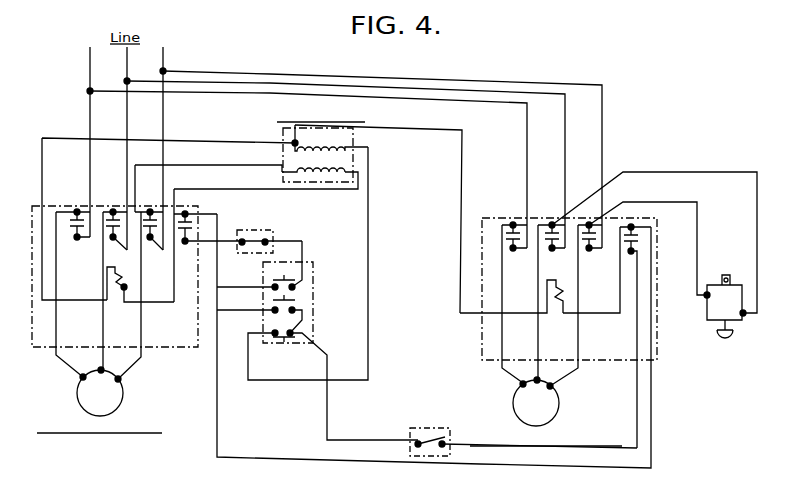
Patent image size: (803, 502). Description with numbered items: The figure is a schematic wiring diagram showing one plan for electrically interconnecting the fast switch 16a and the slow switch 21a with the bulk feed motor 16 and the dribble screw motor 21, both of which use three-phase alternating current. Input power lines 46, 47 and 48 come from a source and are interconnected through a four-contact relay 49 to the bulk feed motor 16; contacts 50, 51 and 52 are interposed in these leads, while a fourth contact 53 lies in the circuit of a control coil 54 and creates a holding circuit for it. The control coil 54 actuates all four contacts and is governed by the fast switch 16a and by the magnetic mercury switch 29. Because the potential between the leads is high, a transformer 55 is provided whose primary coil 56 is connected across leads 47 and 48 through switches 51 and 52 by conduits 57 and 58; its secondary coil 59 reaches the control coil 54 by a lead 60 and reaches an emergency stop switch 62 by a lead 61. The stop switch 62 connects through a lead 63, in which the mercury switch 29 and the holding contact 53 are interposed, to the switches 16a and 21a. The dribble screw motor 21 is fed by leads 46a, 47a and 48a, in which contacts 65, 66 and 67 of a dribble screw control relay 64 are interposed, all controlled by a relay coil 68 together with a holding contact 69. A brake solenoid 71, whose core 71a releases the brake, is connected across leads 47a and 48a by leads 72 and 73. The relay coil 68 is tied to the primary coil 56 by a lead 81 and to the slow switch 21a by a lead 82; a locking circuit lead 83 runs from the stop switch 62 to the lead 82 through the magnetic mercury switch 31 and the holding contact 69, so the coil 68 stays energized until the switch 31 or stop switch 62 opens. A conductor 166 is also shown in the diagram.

The bulk feed motor 16 is at (119, 395).
The fast switch 16a is at (296, 282).
The dribble screw motor 21 is at (553, 412).
The slow switch 21a is at (302, 307).
The magnetic mercury switch 29 is at (262, 231).
The magnetic mercury switch 31 is at (426, 428).
The input power line 46 is at (91, 66).
The lead 46a is at (302, 95).
The input power line 47 is at (128, 66).
The lead 47a is at (363, 83).
The input power line 48 is at (168, 58).
The lead 48a is at (535, 78).
The four-contact relay 49 is at (26, 216).
The contact 50 is at (76, 211).
The contact 51 is at (113, 211).
The contact 52 is at (150, 211).
The holding contact 53 is at (195, 203).
The control coil 54 is at (115, 277).
The transformer 55 is at (280, 137).
The primary coil 56 is at (350, 147).
The electrical conduit 57 is at (205, 166).
The electrical conduit 58 is at (240, 190).
The secondary coil 59 is at (280, 167).
The lead 60 is at (60, 138).
The lead 61 is at (370, 228).
The stop switch 62 is at (302, 330).
The lead 63 is at (215, 232).
The dribble screw control relay 64 is at (480, 328).
The contact 65 is at (512, 224).
The contact 66 is at (551, 224).
The contact 67 is at (590, 251).
The relay coil 68 is at (565, 272).
The holding contact 69 is at (636, 238).
The solenoid 71 is at (733, 333).
The core 71a is at (720, 338).
The lead 72 is at (688, 172).
The lead 73 is at (698, 228).
The lead 81 is at (462, 156).
The lead 82 is at (216, 415).
The lead 83 is at (328, 407).
The conductor 166 is at (174, 290).